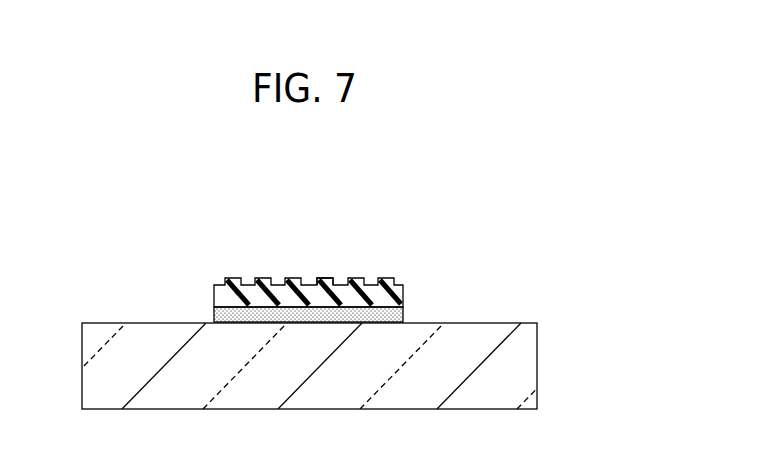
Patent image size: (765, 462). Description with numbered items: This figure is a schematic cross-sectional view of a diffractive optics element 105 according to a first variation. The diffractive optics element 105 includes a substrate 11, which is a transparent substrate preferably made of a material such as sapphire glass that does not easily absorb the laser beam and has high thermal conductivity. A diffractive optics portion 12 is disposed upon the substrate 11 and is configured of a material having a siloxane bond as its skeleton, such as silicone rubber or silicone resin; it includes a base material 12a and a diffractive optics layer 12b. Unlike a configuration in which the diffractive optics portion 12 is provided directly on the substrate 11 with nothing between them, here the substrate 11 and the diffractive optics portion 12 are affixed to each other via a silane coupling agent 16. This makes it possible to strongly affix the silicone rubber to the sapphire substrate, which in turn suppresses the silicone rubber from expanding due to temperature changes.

The diffractive optics element 105 is at (518, 188).
The substrate 11 is at (529, 367).
The diffractive optics portion 12 is at (343, 254).
The base material 12a is at (405, 289).
The diffractive optics layer 12b is at (325, 277).
The silane coupling agent 16 is at (405, 312).